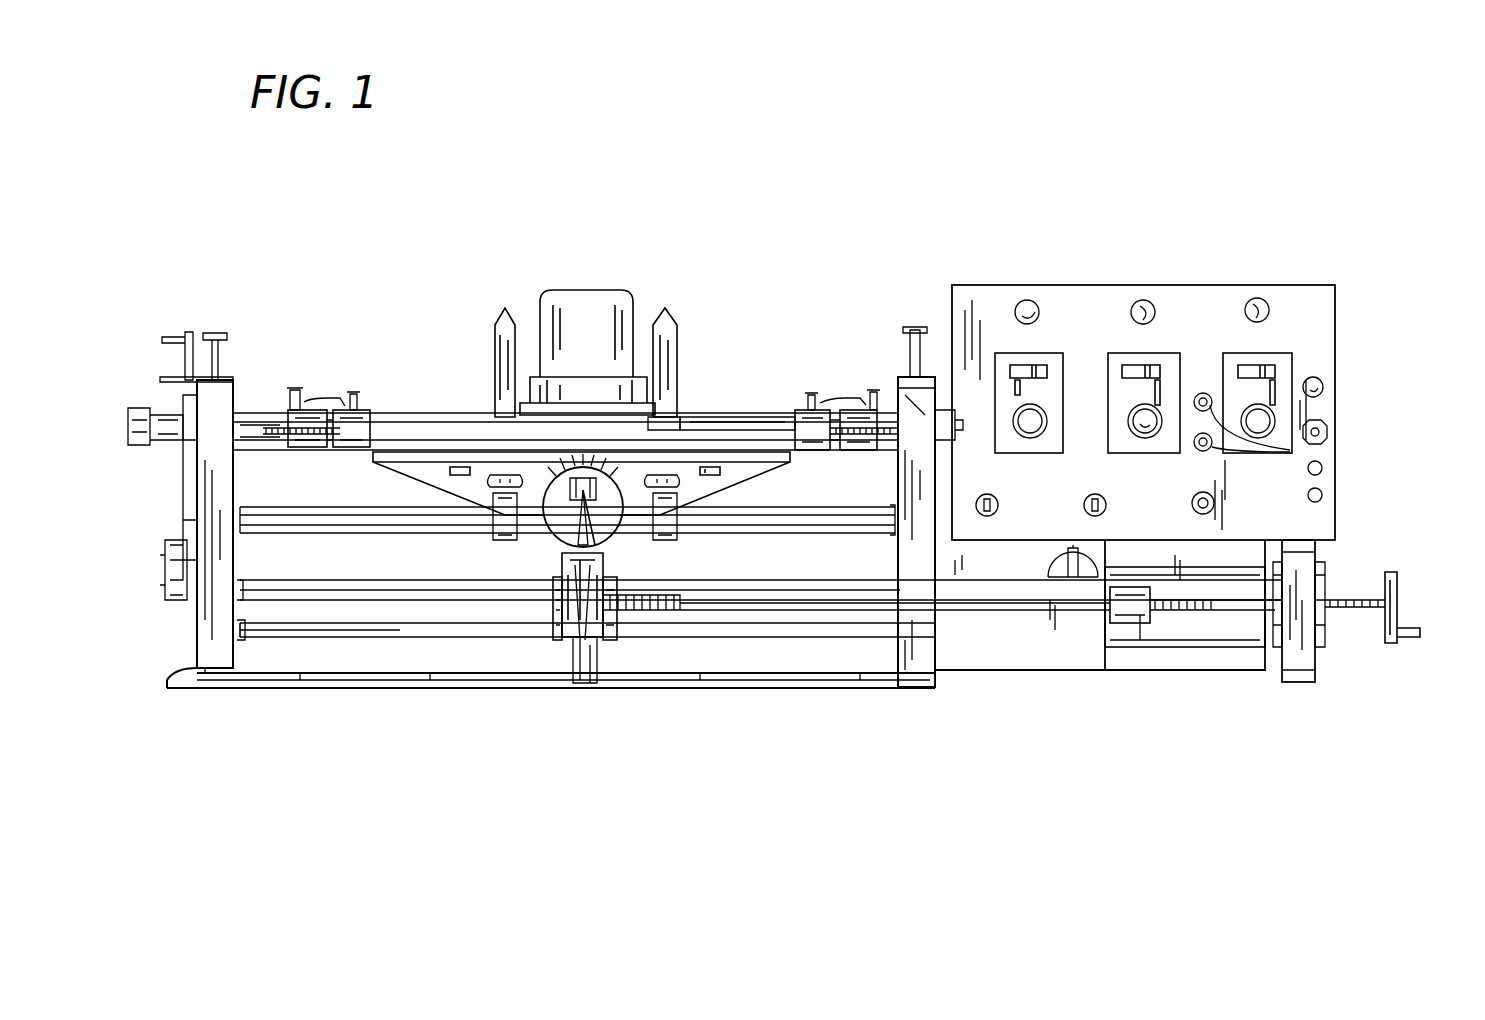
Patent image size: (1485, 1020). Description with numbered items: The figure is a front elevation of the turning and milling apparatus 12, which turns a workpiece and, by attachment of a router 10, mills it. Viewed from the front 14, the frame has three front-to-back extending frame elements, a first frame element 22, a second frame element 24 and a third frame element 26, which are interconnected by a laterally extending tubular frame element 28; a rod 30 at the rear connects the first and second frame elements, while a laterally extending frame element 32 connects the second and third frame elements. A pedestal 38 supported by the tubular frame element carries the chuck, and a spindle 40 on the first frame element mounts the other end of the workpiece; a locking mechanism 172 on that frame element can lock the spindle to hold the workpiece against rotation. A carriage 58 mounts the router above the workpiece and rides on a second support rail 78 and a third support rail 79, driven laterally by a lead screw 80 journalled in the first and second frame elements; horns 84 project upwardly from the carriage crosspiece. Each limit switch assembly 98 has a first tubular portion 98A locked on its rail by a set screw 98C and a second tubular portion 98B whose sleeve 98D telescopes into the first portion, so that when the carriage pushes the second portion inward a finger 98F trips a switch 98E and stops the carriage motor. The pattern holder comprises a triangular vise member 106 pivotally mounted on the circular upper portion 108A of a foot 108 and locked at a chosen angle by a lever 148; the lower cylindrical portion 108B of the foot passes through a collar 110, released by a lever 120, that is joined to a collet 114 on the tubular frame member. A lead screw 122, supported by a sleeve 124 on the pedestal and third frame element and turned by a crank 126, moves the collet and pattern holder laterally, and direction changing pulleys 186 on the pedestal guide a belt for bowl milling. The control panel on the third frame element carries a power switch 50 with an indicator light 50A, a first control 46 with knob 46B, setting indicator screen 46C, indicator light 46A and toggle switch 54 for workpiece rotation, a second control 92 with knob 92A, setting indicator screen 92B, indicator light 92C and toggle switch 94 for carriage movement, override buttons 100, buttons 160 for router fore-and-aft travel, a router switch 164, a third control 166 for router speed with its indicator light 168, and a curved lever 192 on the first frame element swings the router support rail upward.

The router 10 is at (575, 300).
The apparatus 12 is at (380, 270).
The front 14 is at (470, 395).
The first frame element 22 is at (215, 410).
The second frame element 24 is at (910, 375).
The third frame element 26 is at (1310, 650).
The tubular frame element 28 is at (400, 617).
The rod 30 is at (677, 688).
The laterally extending frame element 32 is at (1080, 658).
The pedestal 38 is at (1245, 660).
The spindle 40 is at (230, 460).
The first control 46 is at (1120, 359).
The indicator light 46A is at (1028, 298).
The knob 46B is at (1035, 450).
The setting indicator screen 46C is at (1043, 365).
The power switch 50 is at (1327, 432).
The indicator light 50A is at (1324, 390).
The toggle switch 54 is at (993, 518).
The carriage 58 is at (697, 343).
The second support rail 78 is at (790, 528).
The third support rail 79 is at (165, 410).
The lead screw 80 is at (690, 415).
The horns 84 is at (665, 310).
The second control 92 is at (1156, 367).
The knob 92A is at (1155, 430).
The setting indicator screen 92B is at (1158, 370).
The indicator light 92C is at (1145, 298).
The toggle switch 94 is at (1105, 510).
The limit switch assembly 98 is at (341, 402).
The first tubular portion 98A is at (315, 450).
The second tubular portion 98B is at (360, 450).
The set screw 98C is at (295, 388).
The sleeve 98D is at (340, 450).
The switch 98E is at (348, 400).
The finger 98F is at (354, 392).
The override buttons 100 is at (1292, 452).
The vise member 106 is at (457, 495).
The foot 108 is at (560, 538).
The circular upper portion 108A is at (600, 530).
The lower cylindrical portion 108B is at (603, 657).
The collar 110 is at (562, 568).
The collet 114 is at (555, 625).
The lever 120 is at (580, 680).
The lead screw 122 is at (772, 606).
The sleeve 124 is at (1140, 623).
The crank 126 is at (1400, 598).
The lever 148 is at (615, 525).
The buttons 160 is at (1325, 487).
The router switch 164 is at (1215, 498).
The third control 166 is at (1280, 365).
The indicator light 168 is at (1257, 298).
The locking mechanism 172 is at (186, 322).
The direction changing pulleys 186 is at (1058, 560).
The curved lever 192 is at (185, 518).